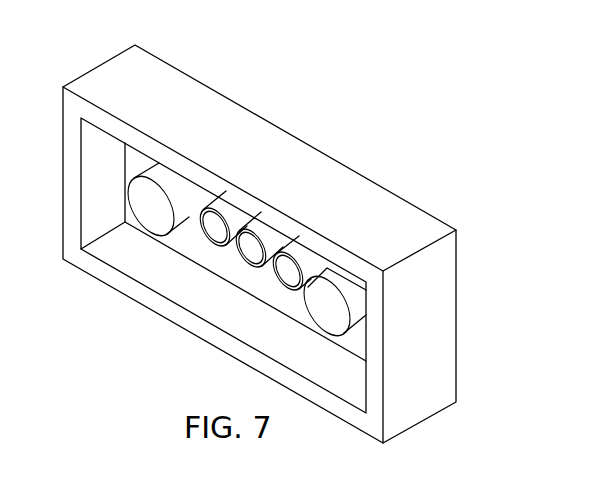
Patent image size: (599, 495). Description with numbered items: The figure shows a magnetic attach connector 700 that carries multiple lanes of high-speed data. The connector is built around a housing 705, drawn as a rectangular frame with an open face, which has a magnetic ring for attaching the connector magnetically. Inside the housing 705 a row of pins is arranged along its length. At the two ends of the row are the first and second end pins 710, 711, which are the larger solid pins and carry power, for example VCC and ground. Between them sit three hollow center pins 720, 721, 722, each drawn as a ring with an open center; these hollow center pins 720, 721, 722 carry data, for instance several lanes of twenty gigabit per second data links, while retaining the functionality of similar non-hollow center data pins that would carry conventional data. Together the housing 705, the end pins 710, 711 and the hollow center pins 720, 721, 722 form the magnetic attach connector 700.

The magnetic attach connector 700 is at (449, 36).
The housing 705 is at (90, 272).
The first end pin 710 is at (152, 218).
The second end pin 711 is at (328, 314).
The hollow center pin 720 is at (203, 238).
The hollow center pin 721 is at (243, 268).
The hollow center pin 722 is at (282, 292).